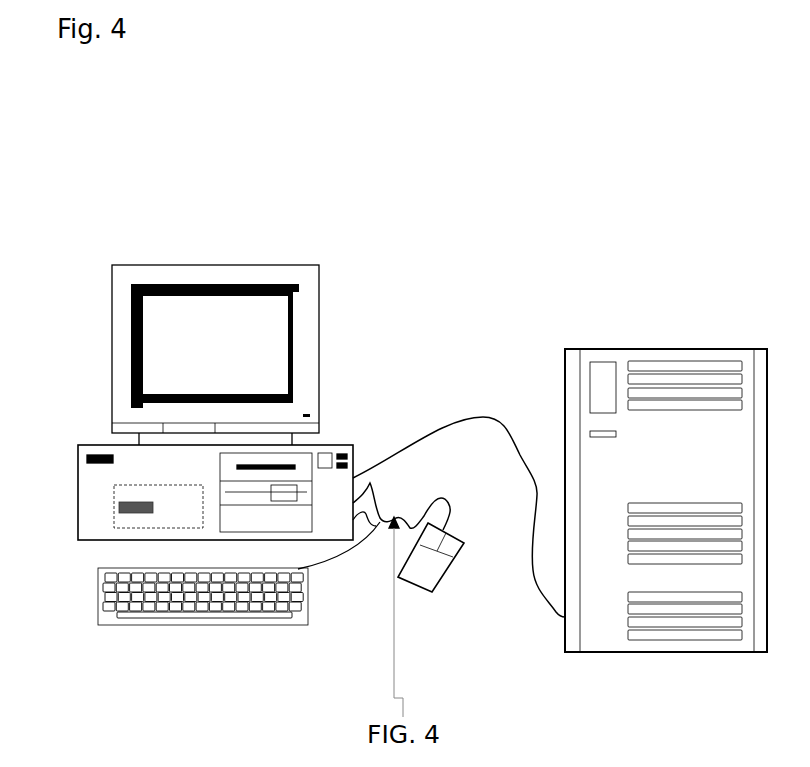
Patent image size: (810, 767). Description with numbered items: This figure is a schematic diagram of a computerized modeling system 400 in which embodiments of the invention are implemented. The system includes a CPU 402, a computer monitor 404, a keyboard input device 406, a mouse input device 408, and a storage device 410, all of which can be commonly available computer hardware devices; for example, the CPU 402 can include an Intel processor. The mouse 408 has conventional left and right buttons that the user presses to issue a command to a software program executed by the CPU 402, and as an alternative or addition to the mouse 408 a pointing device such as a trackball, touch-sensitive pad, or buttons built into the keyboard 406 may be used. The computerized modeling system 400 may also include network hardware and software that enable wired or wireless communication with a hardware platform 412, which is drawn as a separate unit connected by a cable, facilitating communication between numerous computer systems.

The computerized modeling system 400 is at (400, 443).
The CPU 402 is at (120, 508).
The computer monitor 404 is at (280, 340).
The keyboard input device 406 is at (98, 608).
The mouse input device 408 is at (422, 573).
The storage device 410 is at (290, 519).
The hardware platform 412 is at (614, 349).